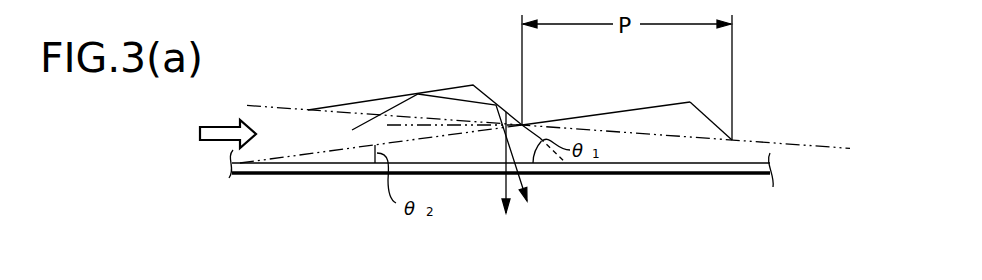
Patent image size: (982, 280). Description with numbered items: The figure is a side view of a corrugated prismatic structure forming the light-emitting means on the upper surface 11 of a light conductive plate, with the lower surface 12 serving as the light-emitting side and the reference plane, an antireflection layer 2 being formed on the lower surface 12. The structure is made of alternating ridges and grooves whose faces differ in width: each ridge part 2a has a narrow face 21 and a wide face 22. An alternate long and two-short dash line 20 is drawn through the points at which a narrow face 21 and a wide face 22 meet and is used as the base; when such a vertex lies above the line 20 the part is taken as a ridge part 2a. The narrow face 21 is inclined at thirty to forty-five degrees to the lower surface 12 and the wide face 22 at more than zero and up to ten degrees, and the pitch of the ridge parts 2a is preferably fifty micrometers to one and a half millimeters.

The antireflection layer 2 is at (291, 176).
The ridge part 2a is at (473, 85).
The upper surface 11 is at (383, 85).
The lower surface 12 is at (662, 163).
The alternate long and two-short dash line 20 is at (837, 147).
The narrow face 21 is at (718, 126).
The wide face 22 is at (613, 111).